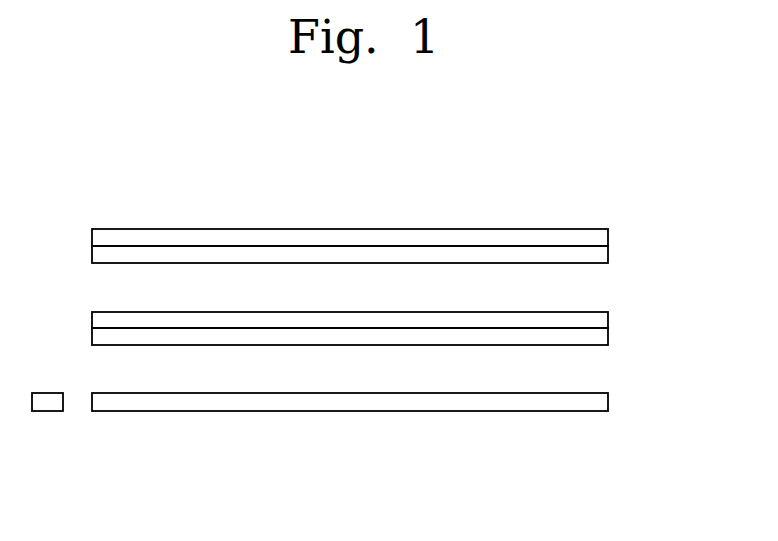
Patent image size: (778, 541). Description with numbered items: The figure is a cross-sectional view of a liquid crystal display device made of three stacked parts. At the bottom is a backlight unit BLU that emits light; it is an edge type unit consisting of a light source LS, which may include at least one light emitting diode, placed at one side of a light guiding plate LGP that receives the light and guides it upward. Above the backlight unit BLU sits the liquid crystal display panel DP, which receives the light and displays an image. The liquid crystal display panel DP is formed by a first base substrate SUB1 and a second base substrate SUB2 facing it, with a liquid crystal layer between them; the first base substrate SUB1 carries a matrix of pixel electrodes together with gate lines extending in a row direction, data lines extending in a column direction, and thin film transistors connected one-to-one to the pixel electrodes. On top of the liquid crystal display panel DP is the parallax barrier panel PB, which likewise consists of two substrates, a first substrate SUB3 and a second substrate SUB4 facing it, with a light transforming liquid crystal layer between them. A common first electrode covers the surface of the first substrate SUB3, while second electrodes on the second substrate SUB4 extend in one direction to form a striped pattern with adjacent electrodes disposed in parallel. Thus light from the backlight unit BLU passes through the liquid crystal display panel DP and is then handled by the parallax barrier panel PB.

The second substrate SUB4 is at (597, 238).
The first substrate SUB3 is at (597, 255).
The parallax barrier panel PB is at (415, 246).
The second base substrate SUB2 is at (597, 320).
The first base substrate SUB1 is at (597, 337).
The liquid crystal display panel DP is at (415, 329).
The light source LS is at (46, 403).
The light guiding plate LGP is at (350, 437).
The backlight unit BLU is at (320, 456).